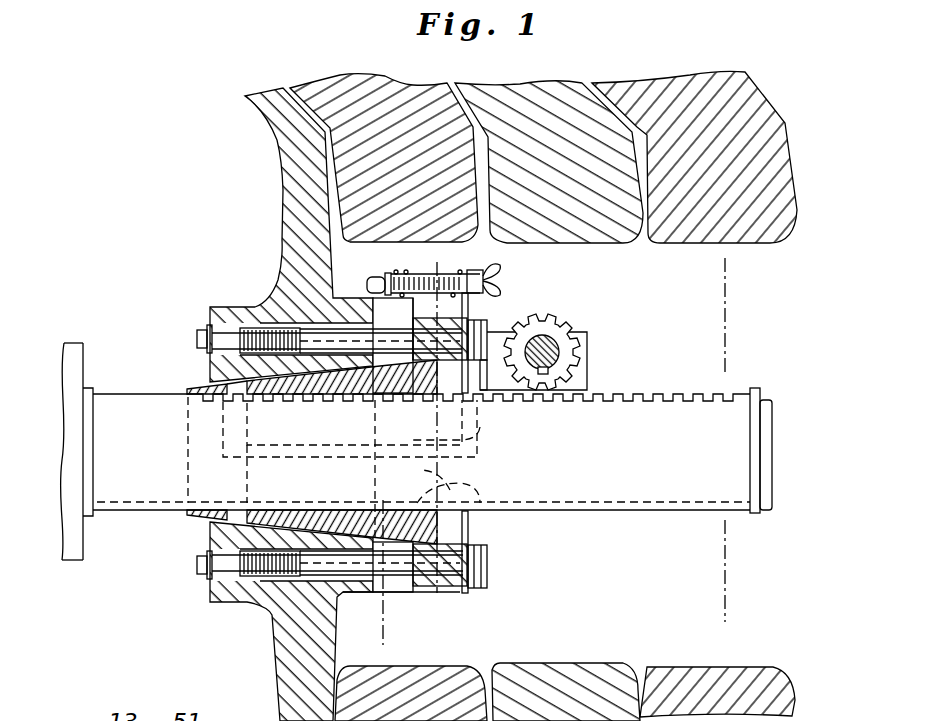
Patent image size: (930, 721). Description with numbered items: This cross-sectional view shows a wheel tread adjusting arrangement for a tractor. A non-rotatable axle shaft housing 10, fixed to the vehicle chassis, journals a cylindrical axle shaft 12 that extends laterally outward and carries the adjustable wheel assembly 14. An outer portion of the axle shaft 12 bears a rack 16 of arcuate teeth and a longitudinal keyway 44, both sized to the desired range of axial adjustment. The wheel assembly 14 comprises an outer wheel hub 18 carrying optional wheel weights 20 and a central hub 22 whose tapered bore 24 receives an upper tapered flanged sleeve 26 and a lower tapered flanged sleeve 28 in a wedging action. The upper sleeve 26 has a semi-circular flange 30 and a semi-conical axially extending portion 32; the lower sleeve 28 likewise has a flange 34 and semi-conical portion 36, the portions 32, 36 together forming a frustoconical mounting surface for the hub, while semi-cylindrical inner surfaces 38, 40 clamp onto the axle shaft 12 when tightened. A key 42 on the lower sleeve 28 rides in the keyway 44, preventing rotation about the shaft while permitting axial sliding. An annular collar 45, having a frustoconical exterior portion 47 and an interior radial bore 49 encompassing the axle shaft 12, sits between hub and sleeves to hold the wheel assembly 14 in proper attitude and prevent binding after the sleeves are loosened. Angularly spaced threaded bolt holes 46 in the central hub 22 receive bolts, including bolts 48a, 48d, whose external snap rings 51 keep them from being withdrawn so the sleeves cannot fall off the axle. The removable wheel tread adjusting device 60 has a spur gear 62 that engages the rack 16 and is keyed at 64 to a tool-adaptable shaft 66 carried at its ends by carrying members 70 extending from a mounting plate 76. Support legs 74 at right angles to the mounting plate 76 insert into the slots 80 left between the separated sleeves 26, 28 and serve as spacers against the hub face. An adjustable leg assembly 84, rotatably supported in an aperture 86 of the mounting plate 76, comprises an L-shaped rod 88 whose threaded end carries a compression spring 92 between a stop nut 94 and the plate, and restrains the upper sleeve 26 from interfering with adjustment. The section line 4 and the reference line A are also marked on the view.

The section line 4- 4 is at (702, 272).
The axle shaft housing 10 is at (86, 344).
The axle shaft 12 is at (432, 478).
The adjustable wheel assembly 14 is at (178, 209).
The rack 16 is at (686, 393).
The outer wheel hub 18 is at (280, 192).
The wheel weights 20 is at (386, 164).
The central hub 22 is at (338, 404).
The tapered bore 24 is at (237, 405).
The upper tapered flanged sleeve 26 is at (431, 310).
The lower tapered flanged sleeve 28 is at (452, 595).
The semi-circular flange 30 is at (468, 305).
The semi-conical axially extending portion 32 is at (337, 384).
The semi-circular flange 34 is at (440, 594).
The semi-conical axially extending portion 36 is at (307, 513).
The semi-cylindrical inner surface 38 is at (278, 388).
The semi-cylindrical inner surface 40 is at (268, 503).
The key 42 is at (477, 520).
The keyway 44 is at (628, 503).
The annular collar 45 is at (183, 386).
The threaded bolt holes 46 is at (301, 438).
The frustoconically shaped exterior portion 47 is at (203, 385).
The bolt 48a is at (483, 395).
The bolt 48d is at (483, 570).
The interior radial bore 49 is at (195, 397).
The external snap rings 51 is at (207, 325).
The wheel tread adjusting device 60 is at (568, 342).
The rotatable tooth-engaging mechanism 62 is at (580, 330).
The key 64 is at (549, 376).
The shaft 66 is at (558, 352).
The carrying members 70 is at (585, 332).
The support legs 74 is at (450, 490).
The mounting plate 76 is at (482, 427).
The slots 80 is at (378, 469).
The adjustable leg assembly 84 is at (441, 235).
The aperture 86 is at (478, 268).
The L-shaped rod 88 is at (367, 293).
The compression spring 92 is at (401, 268).
The stop nut 94 is at (388, 270).
The axis A is at (387, 613).